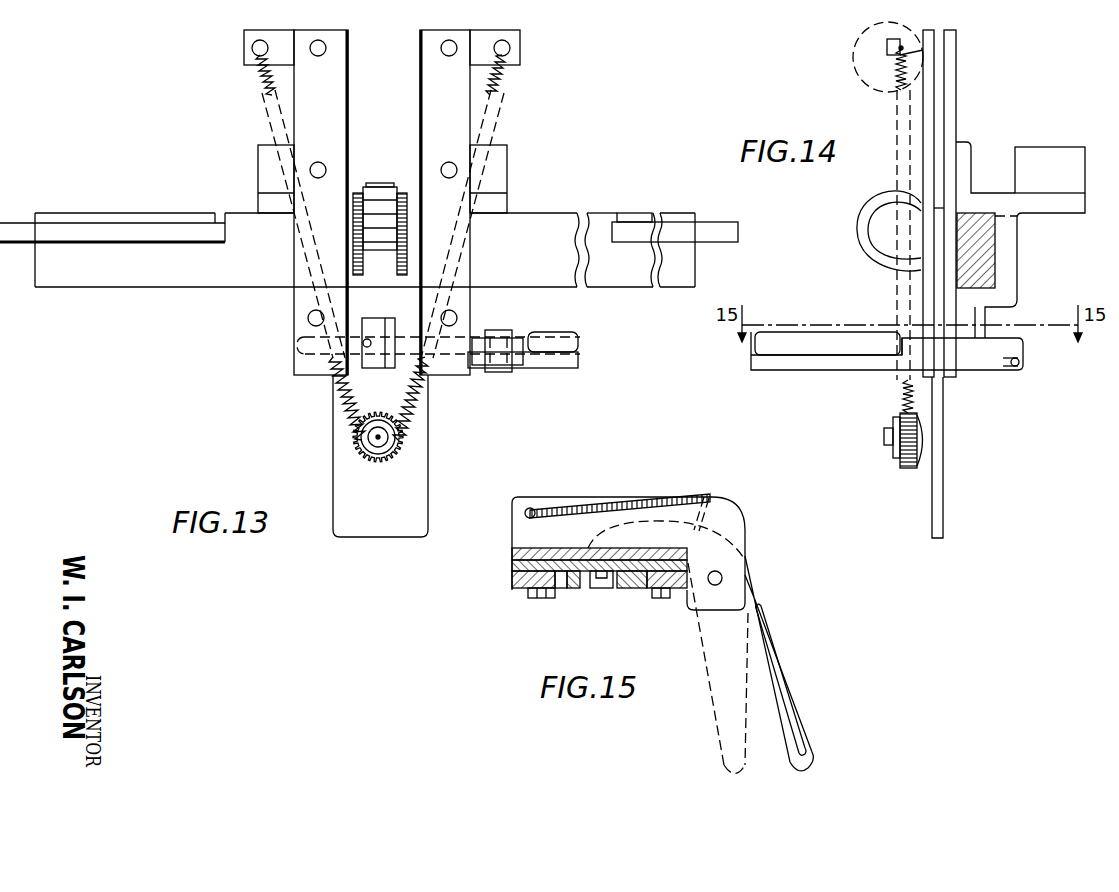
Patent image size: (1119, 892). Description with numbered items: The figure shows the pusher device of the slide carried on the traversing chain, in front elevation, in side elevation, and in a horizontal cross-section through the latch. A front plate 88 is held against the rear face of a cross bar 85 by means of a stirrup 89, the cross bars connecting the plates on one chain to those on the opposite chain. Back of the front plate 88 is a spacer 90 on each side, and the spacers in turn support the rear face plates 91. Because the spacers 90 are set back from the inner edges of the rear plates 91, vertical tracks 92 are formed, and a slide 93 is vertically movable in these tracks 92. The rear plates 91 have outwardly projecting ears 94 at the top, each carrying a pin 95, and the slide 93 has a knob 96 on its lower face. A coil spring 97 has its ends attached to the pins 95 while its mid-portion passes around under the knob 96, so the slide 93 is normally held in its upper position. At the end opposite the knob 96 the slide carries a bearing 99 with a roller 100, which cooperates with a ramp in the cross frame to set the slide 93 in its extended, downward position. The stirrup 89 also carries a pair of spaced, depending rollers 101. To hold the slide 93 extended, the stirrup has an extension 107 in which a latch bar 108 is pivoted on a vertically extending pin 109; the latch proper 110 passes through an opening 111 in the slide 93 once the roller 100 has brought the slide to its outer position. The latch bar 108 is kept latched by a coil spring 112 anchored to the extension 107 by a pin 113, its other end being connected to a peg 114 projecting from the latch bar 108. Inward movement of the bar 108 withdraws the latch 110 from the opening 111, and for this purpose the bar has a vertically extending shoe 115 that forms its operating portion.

In FIG. 13, the cross bar 85 is at (538, 224).
In FIG. 14, the cross bar 85 is at (985, 240).
In FIG. 14, the front plate 88 is at (956, 80).
In FIG. 15, the front plate 88 is at (512, 566).
In FIG. 14, the stirrup 89 is at (1005, 283).
In FIG. 15, the stirrup 89 is at (512, 554).
In FIG. 14, the spacer 90 is at (935, 282).
In FIG. 15, the spacer 90 is at (512, 583).
In FIG. 13, the rear face plate 91 is at (425, 95).
In FIG. 15, the rear face plate 91 is at (525, 594).
In FIG. 15, the vertical track 92 is at (575, 597).
In FIG. 13, the slide 93 is at (383, 527).
In FIG. 14, the slide 93 is at (937, 508).
In FIG. 15, the slide 93 is at (630, 596).
In FIG. 13, the ear 94 is at (244, 46).
In FIG. 14, the ear 94 is at (932, 50).
In FIG. 13, the pin 95 is at (262, 42).
In FIG. 14, the pin 95 is at (898, 43).
In FIG. 13, the knob 96 is at (366, 437).
In FIG. 14, the knob 96 is at (898, 450).
In FIG. 13, the coil spring 97 is at (336, 400).
In FIG. 14, the coil spring 97 is at (904, 400).
In FIG. 13, the bearing 99 is at (356, 192).
In FIG. 14, the bearing 99 is at (883, 233).
In FIG. 13, the roller 100 is at (384, 196).
In FIG. 14, the roller 100 is at (877, 196).
In FIG. 13, the depending roller 101 is at (270, 152).
In FIG. 14, the depending roller 101 is at (1043, 156).
In FIG. 13, the extension 107 is at (481, 345).
In FIG. 14, the extension 107 is at (1006, 345).
In FIG. 15, the extension 107 is at (518, 512).
In FIG. 13, the latch bar 108 is at (536, 362).
In FIG. 14, the latch bar 108 is at (803, 357).
In FIG. 15, the latch bar 108 is at (752, 643).
In FIG. 13, the pin 109 is at (505, 333).
In FIG. 15, the pin 109 is at (723, 578).
In FIG. 13, the latch 110 is at (385, 322).
In FIG. 15, the latch 110 is at (603, 588).
In FIG. 13, the opening 111 is at (340, 352).
In FIG. 15, the coil spring 112 is at (604, 506).
In FIG. 15, the pin 113 is at (534, 510).
In FIG. 14, the peg 114 is at (1019, 363).
In FIG. 15, the peg 114 is at (707, 494).
In FIG. 13, the shoe 115 is at (575, 346).
In FIG. 14, the shoe 115 is at (793, 340).
In FIG. 15, the shoe 115 is at (776, 658).